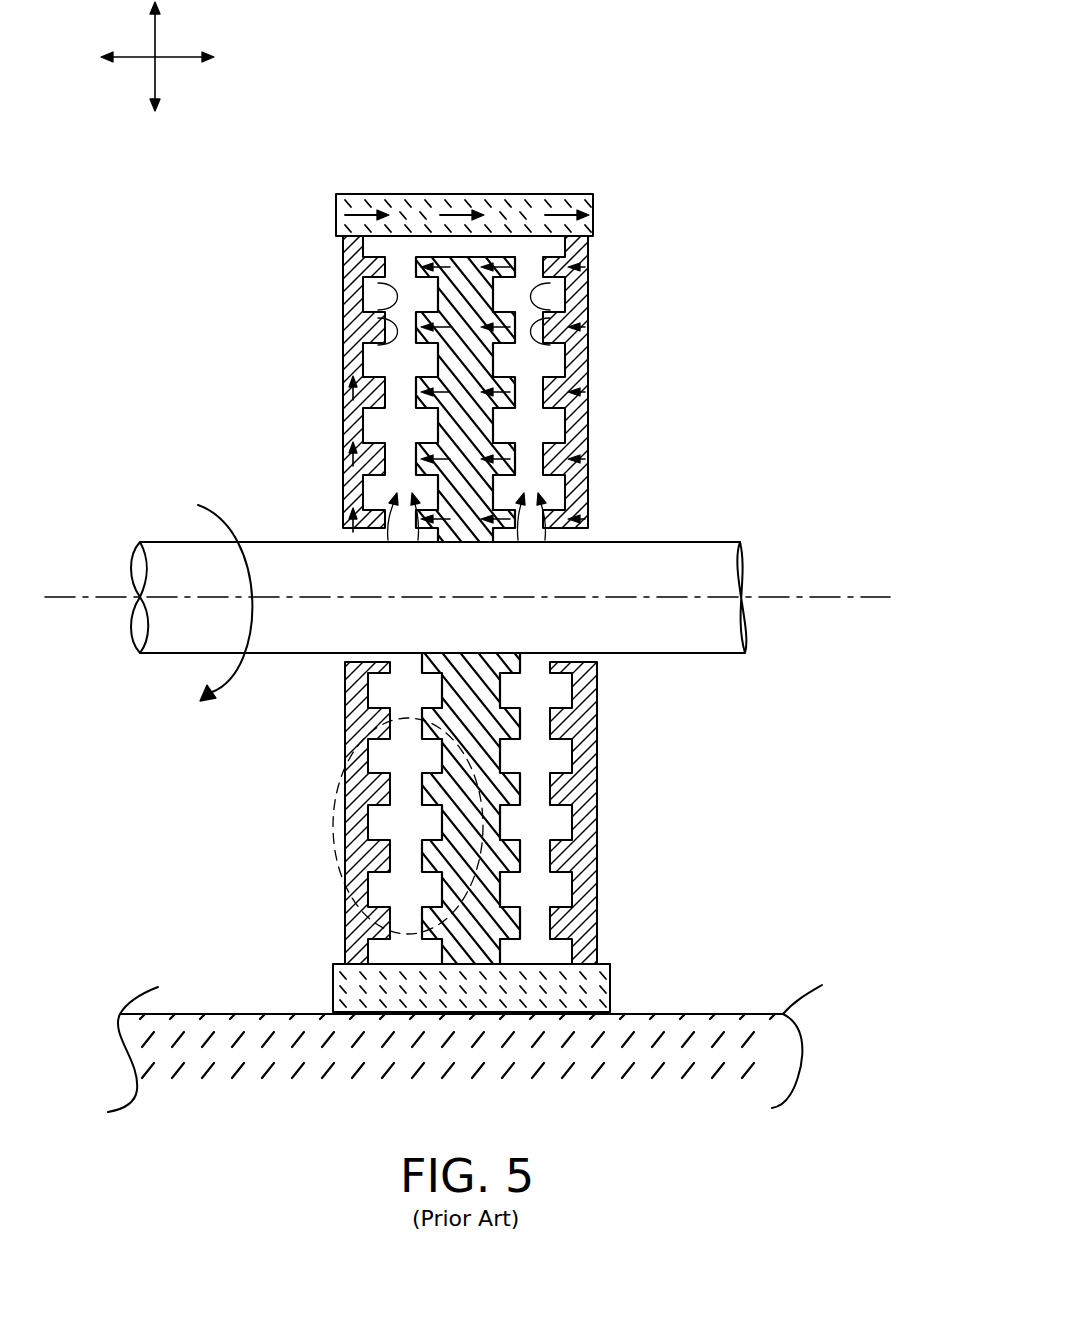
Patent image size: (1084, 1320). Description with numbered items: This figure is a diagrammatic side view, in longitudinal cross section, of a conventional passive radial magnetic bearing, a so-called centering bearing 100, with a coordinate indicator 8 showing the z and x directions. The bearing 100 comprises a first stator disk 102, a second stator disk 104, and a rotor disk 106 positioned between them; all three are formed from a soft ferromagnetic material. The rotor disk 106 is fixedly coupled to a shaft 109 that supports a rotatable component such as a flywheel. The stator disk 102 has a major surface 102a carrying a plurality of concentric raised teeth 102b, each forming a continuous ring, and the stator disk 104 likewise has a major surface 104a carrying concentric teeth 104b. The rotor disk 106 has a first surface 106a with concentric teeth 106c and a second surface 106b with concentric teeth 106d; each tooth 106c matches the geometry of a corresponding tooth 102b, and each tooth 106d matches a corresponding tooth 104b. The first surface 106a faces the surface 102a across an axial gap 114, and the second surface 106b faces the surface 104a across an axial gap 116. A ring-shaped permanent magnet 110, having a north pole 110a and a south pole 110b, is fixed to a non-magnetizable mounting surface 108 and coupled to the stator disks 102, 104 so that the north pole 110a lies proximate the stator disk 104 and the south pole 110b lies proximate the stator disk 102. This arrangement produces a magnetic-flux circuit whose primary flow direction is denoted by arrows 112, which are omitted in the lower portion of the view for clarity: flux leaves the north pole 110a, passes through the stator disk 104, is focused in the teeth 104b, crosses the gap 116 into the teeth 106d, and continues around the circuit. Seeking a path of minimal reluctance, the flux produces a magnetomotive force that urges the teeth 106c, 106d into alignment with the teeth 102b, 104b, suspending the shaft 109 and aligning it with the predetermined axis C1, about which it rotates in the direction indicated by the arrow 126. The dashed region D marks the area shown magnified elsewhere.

The coordinate axes 8 is at (165, 45).
The centering bearing 100 is at (303, 210).
The first stator disk 102 is at (344, 248).
The major surface 102a is at (395, 530).
The teeth 102b is at (376, 290).
The second stator disk 104 is at (590, 290).
The major surface 104a is at (545, 530).
The teeth 104b is at (565, 283).
The rotor disk 106 is at (495, 320).
The first surface 106a is at (405, 257).
The second surface 106b is at (556, 270).
The teeth 106c is at (420, 903).
The teeth 106d is at (502, 860).
The non-magnetizable mounting surface 108 is at (658, 1022).
The shaft 109 is at (672, 560).
The ring-shaped permanent magnet 110 is at (388, 195).
The north pole 110a is at (595, 194).
The south pole 110b is at (338, 195).
The arrows 112 is at (482, 257).
The axial gap 114 is at (395, 400).
The axial gap 116 is at (573, 312).
The arrow 126 is at (243, 532).
The area D is at (325, 818).
The axis C1 is at (806, 597).